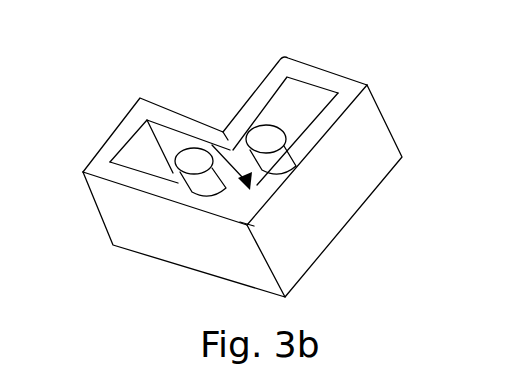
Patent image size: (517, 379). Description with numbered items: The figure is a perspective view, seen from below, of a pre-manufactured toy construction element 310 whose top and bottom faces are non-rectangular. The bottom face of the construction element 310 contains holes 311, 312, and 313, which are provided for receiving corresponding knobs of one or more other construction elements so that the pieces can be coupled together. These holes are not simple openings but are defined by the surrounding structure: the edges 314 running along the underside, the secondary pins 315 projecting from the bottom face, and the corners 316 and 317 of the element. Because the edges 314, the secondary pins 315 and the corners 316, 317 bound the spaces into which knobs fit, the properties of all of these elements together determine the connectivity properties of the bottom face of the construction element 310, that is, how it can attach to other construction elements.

The construction element 310 is at (368, 254).
The hole 311 is at (257, 150).
The hole 312 is at (195, 163).
The hole 313 is at (290, 96).
The edges 314 is at (260, 92).
The secondary pins 315 is at (140, 154).
The corner 316 is at (223, 132).
The corner 317 is at (250, 214).